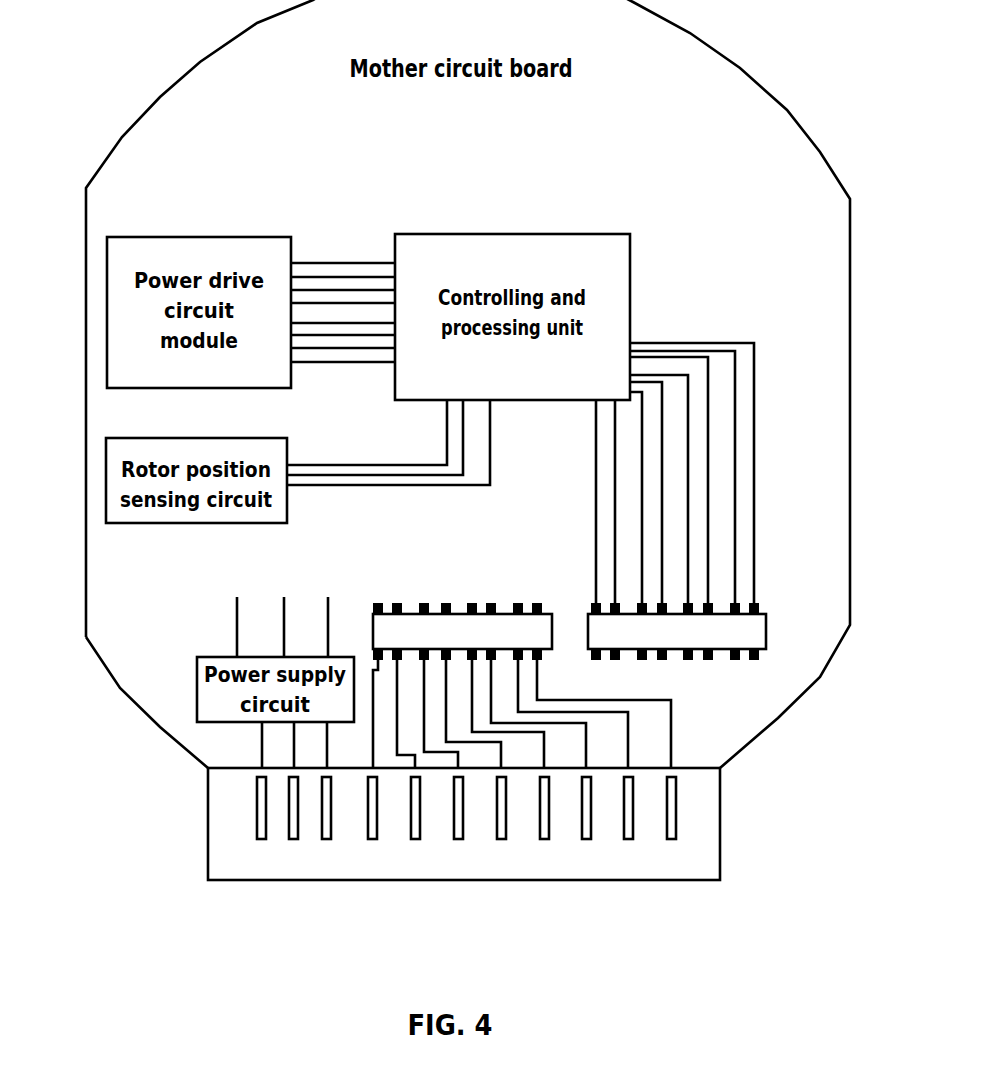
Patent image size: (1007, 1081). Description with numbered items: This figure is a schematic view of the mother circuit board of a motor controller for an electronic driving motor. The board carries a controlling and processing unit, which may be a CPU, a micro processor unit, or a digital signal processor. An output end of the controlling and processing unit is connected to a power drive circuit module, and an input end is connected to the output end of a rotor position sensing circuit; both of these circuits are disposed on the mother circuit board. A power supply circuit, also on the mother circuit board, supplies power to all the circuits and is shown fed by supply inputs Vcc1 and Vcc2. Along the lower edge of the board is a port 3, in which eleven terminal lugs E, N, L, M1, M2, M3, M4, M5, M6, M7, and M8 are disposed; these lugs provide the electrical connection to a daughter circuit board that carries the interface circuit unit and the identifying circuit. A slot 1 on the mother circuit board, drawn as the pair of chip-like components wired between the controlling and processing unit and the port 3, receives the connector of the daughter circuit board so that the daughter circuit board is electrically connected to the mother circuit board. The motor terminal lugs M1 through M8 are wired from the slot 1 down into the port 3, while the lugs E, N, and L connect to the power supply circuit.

The slot 1 is at (537, 630).
The port 3 is at (388, 816).
The terminal lug E is at (261, 822).
The terminal lug N is at (294, 822).
The terminal lug L is at (327, 822).
The terminal lug M1 is at (373, 822).
The terminal lug M2 is at (415, 822).
The terminal lug M3 is at (458, 822).
The terminal lug M4 is at (501, 822).
The terminal lug M5 is at (544, 822).
The terminal lug M6 is at (586, 822).
The terminal lug M7 is at (628, 822).
The terminal lug M8 is at (671, 822).
The first supply voltage input Vcc1 is at (220, 611).
The second supply voltage input Vcc2 is at (298, 611).